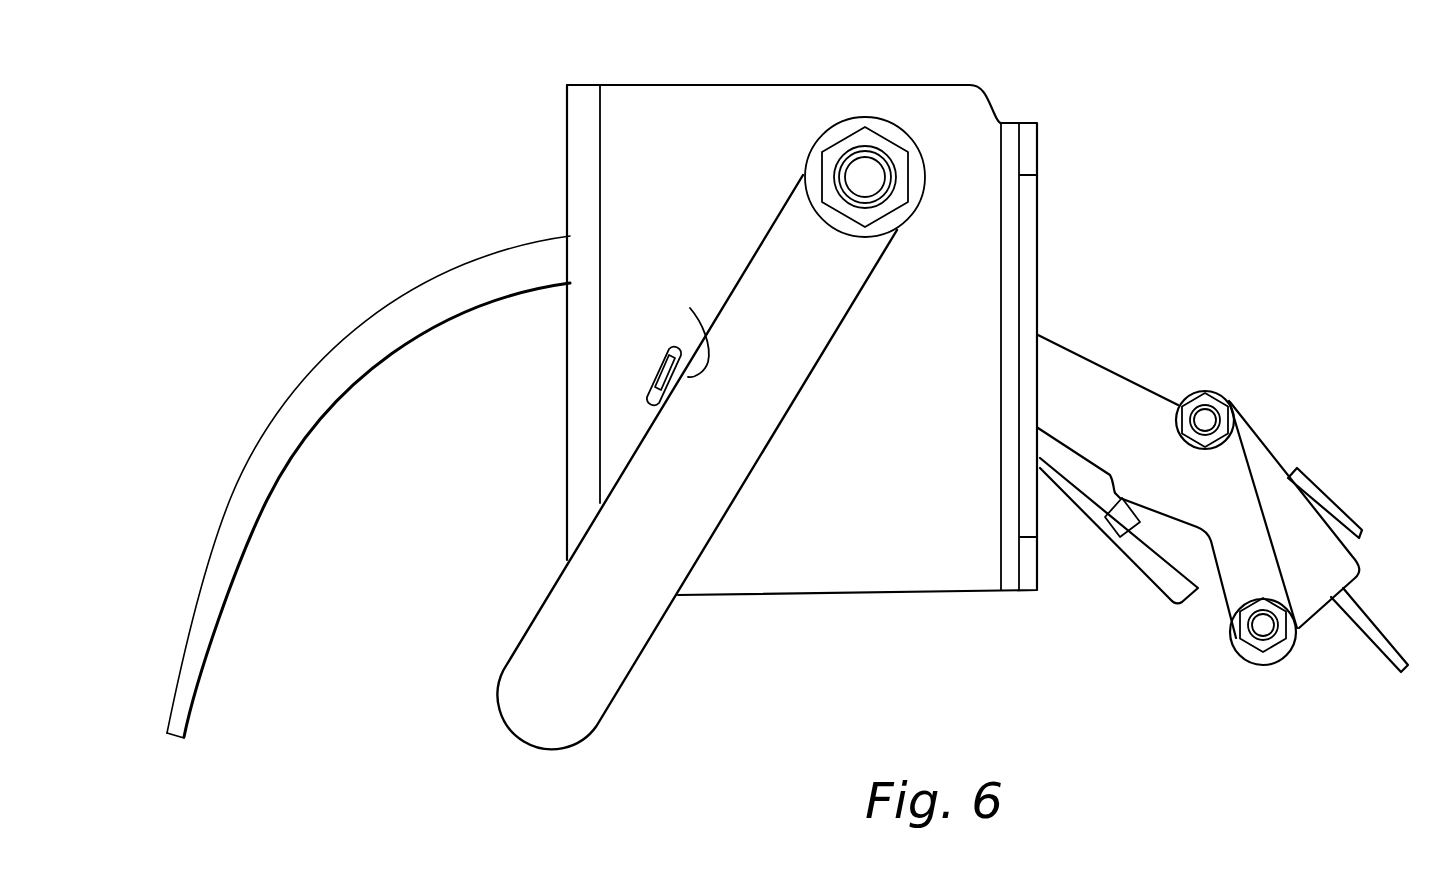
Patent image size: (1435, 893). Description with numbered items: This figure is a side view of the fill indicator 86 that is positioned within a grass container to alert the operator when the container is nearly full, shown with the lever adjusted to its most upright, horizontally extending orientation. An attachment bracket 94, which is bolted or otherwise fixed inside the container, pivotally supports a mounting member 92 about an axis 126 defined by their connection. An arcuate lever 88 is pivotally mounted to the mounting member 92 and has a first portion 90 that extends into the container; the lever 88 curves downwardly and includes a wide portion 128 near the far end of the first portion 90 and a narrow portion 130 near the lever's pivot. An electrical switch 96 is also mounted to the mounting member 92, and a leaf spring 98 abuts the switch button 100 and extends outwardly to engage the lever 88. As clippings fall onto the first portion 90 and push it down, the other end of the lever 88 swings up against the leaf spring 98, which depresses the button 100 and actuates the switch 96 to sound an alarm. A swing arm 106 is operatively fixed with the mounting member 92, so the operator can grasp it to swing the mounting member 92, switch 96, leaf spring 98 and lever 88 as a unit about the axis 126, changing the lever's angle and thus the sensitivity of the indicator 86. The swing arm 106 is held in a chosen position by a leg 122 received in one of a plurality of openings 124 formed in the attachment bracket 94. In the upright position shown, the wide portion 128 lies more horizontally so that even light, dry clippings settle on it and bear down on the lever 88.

The fill indicator 86 is at (1138, 128).
The arcuate lever 88 is at (321, 360).
The first portion 90 is at (268, 463).
The mounting member 92 is at (1070, 383).
The attachment bracket 94 is at (687, 102).
The electrical switch 96 is at (1262, 473).
The leaf spring 98 is at (1161, 592).
The switch button 100 is at (1118, 520).
The swing arm 106 is at (640, 670).
The leg 122 is at (666, 392).
The openings 124 is at (671, 336).
The axis 126 is at (868, 180).
The wide portion 128 is at (186, 641).
The narrow portion 130 is at (505, 250).